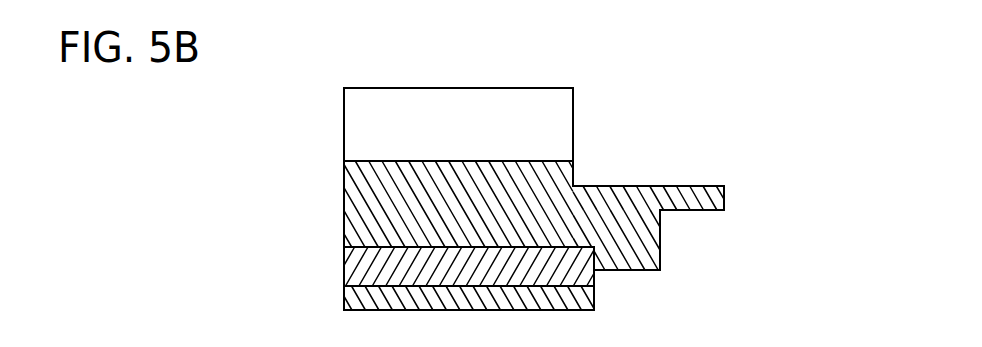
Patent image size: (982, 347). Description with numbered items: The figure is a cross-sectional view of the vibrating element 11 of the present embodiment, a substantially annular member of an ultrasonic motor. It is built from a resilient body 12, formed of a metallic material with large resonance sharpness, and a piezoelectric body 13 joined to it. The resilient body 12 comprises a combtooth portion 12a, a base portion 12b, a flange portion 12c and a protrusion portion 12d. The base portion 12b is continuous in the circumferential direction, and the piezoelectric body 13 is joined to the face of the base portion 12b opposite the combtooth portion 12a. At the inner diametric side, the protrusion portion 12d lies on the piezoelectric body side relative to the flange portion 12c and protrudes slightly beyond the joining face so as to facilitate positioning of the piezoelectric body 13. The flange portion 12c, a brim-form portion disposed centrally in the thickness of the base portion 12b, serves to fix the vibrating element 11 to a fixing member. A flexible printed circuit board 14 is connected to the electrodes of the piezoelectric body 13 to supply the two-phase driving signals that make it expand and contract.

The vibrating element 11 is at (632, 56).
The resilient body 12 is at (817, 72).
The combtooth portion 12a is at (534, 132).
The base portion 12b is at (467, 207).
The flange portion 12c is at (700, 201).
The protrusion portion 12d is at (637, 256).
The piezoelectric body 13 is at (364, 272).
The flexible printed circuit board 14 is at (365, 299).